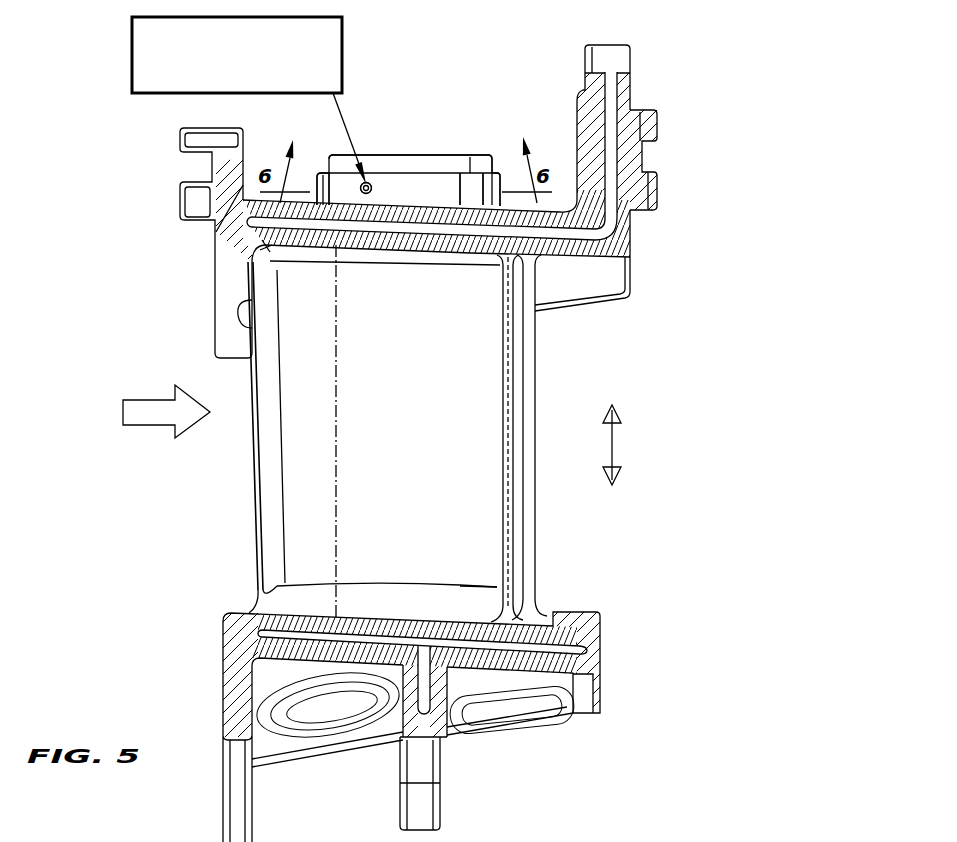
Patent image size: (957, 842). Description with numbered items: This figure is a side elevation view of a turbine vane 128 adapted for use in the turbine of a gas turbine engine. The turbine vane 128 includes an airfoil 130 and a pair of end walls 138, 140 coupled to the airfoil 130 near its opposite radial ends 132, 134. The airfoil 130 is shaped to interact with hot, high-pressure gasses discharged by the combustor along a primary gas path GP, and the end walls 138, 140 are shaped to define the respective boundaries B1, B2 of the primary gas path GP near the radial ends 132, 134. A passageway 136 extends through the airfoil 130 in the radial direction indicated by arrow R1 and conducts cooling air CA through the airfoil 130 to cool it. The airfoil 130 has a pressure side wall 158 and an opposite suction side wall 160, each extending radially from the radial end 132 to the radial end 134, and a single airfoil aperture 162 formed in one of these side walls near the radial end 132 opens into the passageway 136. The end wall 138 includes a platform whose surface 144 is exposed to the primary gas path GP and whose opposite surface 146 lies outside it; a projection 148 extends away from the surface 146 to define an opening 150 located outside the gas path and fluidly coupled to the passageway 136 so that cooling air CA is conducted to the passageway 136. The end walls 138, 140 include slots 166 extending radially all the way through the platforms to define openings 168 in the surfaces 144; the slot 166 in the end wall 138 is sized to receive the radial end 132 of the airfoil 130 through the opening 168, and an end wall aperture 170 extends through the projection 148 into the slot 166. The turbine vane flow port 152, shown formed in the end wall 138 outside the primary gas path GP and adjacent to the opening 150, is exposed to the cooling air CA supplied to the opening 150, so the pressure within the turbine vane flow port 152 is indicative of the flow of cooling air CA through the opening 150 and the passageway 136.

The turbine vane 128 is at (640, 50).
The airfoil 130 is at (488, 417).
The radial end 132 is at (438, 195).
The radial end 134 is at (338, 652).
The passageway 136 is at (367, 468).
The end wall 138 is at (662, 157).
The end wall 140 is at (593, 655).
The surface 144 is at (403, 252).
The surface 146 is at (322, 175).
The projection 148 is at (472, 186).
The opening 150 is at (433, 177).
The turbine vane flow port 152 is at (430, 100).
The pressure side wall 158 is at (257, 487).
The suction side wall 160 is at (310, 440).
The airfoil aperture 162 is at (371, 185).
The slot 166 is at (267, 247).
The opening 168 is at (378, 262).
The end wall aperture 170 is at (367, 181).
The boundary B1 is at (561, 255).
The boundary B2 is at (445, 623).
The primary gas path GP is at (140, 400).
The radial direction R1 is at (614, 445).
The cooling air CA is at (660, 840).